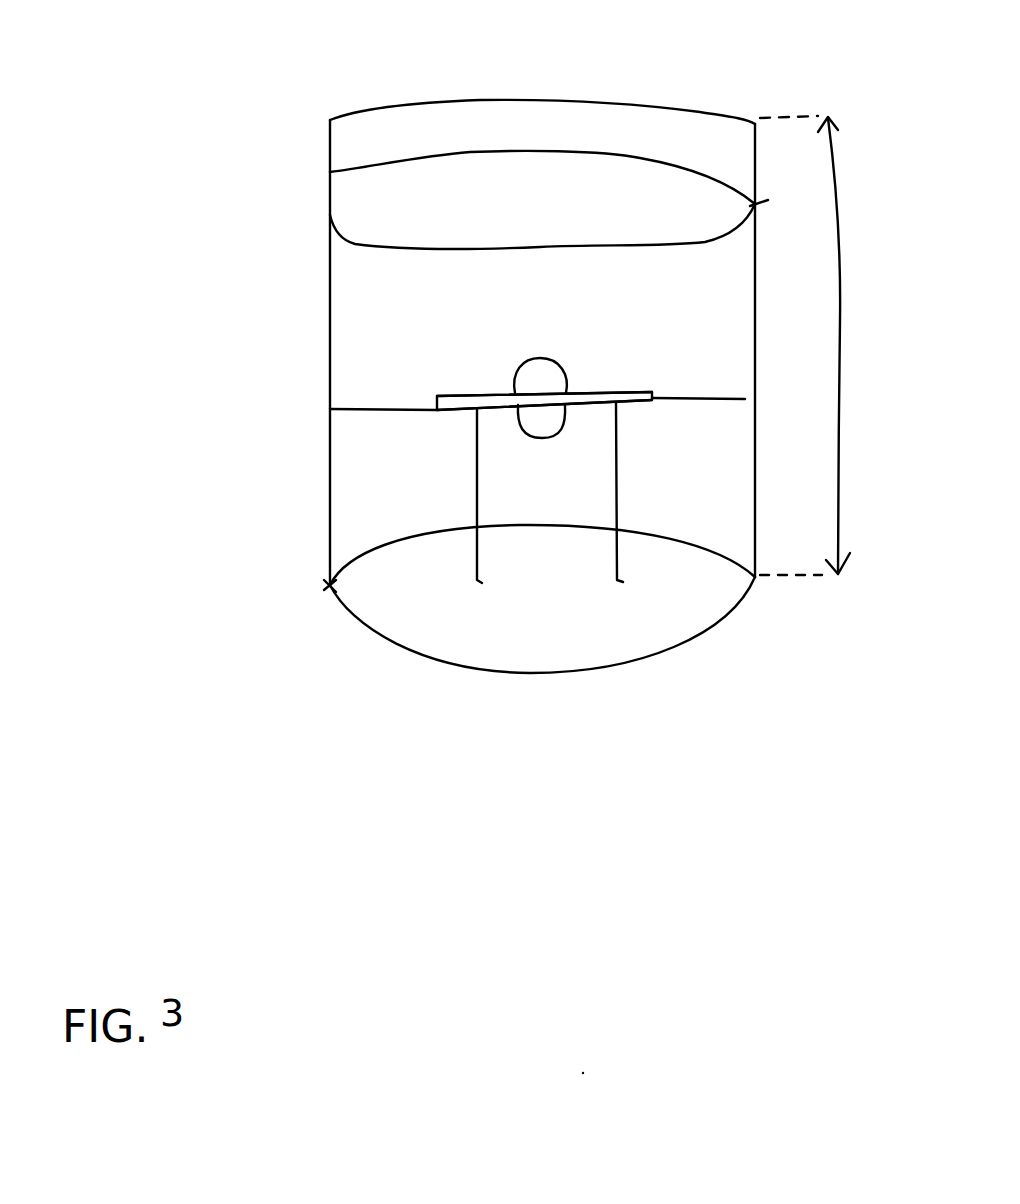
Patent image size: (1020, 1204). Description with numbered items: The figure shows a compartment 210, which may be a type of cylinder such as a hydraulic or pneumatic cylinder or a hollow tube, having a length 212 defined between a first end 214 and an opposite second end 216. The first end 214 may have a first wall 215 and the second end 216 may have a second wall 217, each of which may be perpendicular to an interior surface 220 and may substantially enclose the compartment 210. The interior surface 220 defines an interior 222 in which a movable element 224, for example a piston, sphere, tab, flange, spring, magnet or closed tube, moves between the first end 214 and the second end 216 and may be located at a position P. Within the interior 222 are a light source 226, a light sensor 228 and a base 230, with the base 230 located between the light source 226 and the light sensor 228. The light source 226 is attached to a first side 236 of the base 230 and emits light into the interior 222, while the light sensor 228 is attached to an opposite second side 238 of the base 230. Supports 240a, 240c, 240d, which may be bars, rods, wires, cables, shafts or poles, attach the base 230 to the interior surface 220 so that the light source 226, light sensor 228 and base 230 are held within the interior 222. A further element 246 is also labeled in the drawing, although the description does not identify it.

The compartment 210 is at (792, 76).
The length 212 is at (831, 345).
The first end 214 is at (330, 587).
The first wall 215 is at (425, 636).
The second end 216 is at (326, 120).
The second wall 217 is at (490, 88).
The interior surface 220 is at (503, 638).
The interior 222 is at (362, 288).
The movable element 224 is at (355, 197).
The light source 226 is at (567, 368).
The light sensor 228 is at (565, 438).
The base 230 is at (437, 395).
The first side 236 is at (460, 393).
The second side 238 is at (630, 403).
The support 240a is at (350, 412).
The support 240c is at (618, 552).
The support 240d is at (687, 397).
The support member 246 is at (477, 548).
The position P is at (785, 202).